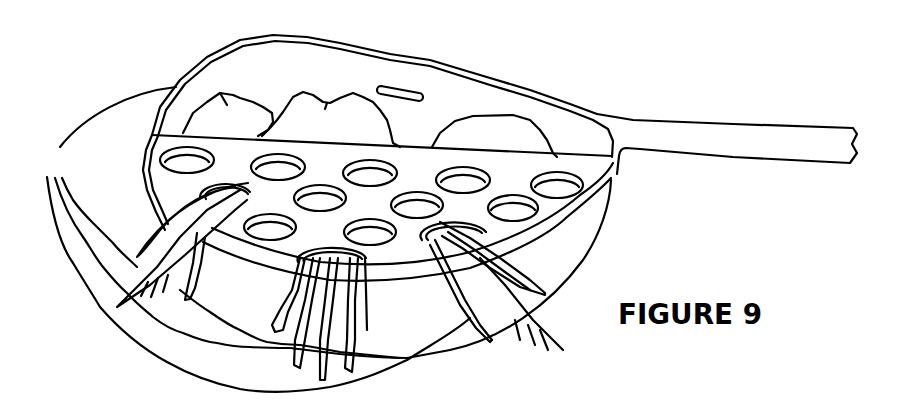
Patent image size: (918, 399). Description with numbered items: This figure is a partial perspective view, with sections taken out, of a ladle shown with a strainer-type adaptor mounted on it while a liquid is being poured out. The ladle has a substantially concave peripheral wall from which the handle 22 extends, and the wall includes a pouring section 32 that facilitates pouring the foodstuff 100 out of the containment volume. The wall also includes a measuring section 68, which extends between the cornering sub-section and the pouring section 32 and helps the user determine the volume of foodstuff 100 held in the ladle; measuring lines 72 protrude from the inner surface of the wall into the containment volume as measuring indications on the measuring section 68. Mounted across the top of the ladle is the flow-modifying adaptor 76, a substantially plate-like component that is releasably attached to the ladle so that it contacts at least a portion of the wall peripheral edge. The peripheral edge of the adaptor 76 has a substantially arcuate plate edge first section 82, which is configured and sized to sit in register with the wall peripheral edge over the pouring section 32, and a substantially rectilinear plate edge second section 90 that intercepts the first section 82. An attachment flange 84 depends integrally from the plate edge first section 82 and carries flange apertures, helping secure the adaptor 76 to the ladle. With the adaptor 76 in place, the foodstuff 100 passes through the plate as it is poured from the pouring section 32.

The handle 22 is at (762, 137).
The pouring section 32 is at (468, 340).
The measuring section 68 is at (492, 97).
The measuring lines 72 is at (388, 89).
The flow-modifying adaptor 76 is at (617, 174).
The plate edge first section 82 is at (585, 212).
The attachment flange 84 is at (540, 240).
The plate edge second section 90 is at (412, 147).
The foodstuff 100 is at (242, 222).